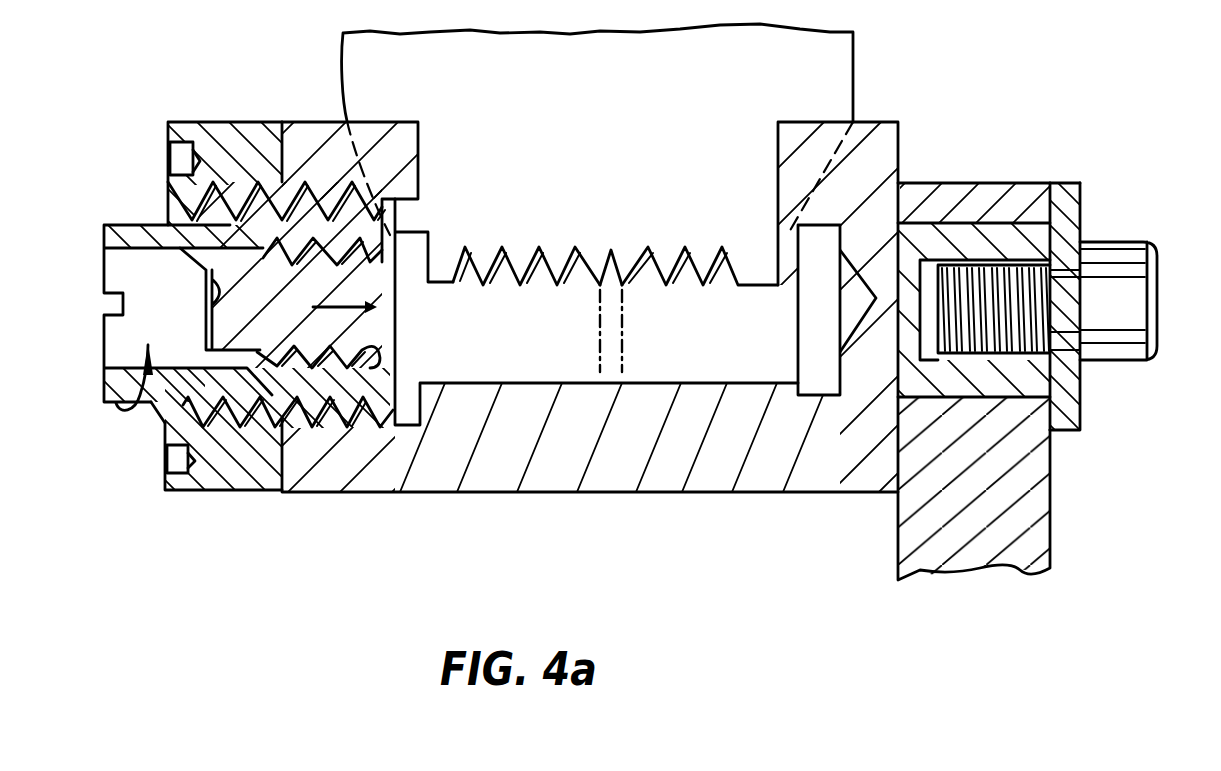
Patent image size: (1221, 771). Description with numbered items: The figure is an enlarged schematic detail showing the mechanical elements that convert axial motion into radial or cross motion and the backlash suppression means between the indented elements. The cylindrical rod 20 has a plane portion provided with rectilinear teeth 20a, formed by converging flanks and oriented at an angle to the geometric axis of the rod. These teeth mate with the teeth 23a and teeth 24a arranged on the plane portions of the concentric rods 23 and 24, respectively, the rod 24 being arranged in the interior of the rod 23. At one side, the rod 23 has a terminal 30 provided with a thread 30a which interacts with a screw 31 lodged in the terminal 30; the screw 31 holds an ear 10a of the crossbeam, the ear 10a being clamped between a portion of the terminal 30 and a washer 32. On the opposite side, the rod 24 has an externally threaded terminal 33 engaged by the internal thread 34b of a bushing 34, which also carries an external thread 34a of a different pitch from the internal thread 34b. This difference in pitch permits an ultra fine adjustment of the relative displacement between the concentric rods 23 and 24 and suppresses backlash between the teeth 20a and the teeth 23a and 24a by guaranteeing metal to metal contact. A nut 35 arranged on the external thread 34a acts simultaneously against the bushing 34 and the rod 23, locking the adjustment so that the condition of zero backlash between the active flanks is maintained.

The ear of the crossbeam 10a is at (968, 192).
The cylindrical rod 20 is at (827, 74).
The rectilinear teeth 20a is at (630, 255).
The concentric rod 23 is at (693, 463).
The teeth of rod 23 23a is at (688, 253).
The concentric rod 24 is at (548, 365).
The teeth of rod 24 24a is at (478, 265).
The terminal 30 is at (1000, 380).
The thread 30a is at (1073, 400).
The screw 31 is at (1027, 320).
The washer 32 is at (1082, 192).
The terminal 33 is at (162, 227).
The bushing 34 is at (187, 210).
The external thread 34a is at (182, 407).
The internal thread 34b is at (282, 393).
The nut 35 is at (245, 137).